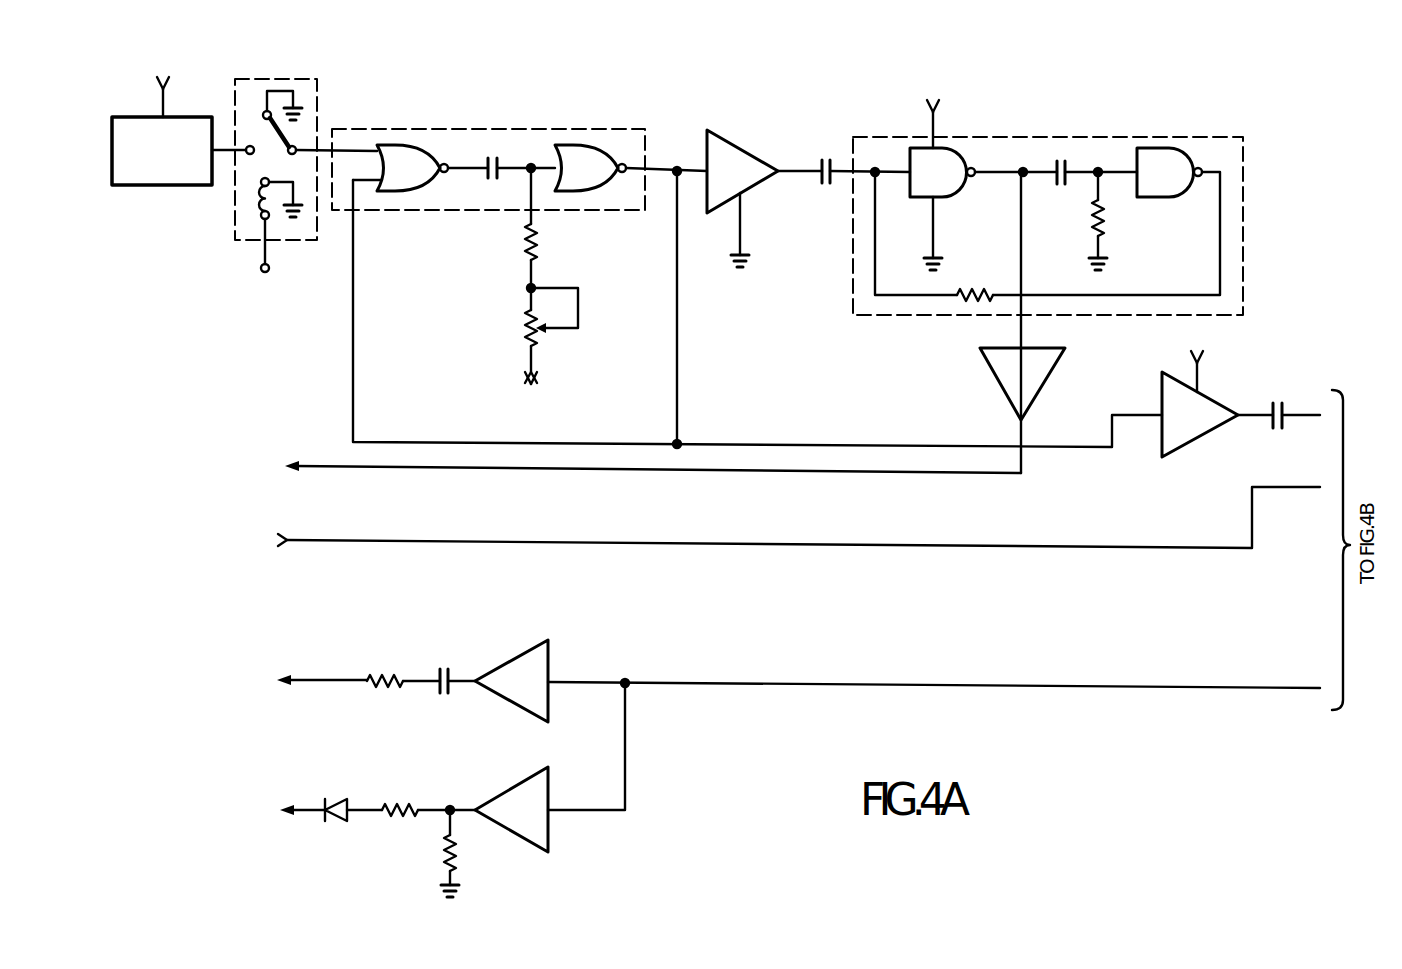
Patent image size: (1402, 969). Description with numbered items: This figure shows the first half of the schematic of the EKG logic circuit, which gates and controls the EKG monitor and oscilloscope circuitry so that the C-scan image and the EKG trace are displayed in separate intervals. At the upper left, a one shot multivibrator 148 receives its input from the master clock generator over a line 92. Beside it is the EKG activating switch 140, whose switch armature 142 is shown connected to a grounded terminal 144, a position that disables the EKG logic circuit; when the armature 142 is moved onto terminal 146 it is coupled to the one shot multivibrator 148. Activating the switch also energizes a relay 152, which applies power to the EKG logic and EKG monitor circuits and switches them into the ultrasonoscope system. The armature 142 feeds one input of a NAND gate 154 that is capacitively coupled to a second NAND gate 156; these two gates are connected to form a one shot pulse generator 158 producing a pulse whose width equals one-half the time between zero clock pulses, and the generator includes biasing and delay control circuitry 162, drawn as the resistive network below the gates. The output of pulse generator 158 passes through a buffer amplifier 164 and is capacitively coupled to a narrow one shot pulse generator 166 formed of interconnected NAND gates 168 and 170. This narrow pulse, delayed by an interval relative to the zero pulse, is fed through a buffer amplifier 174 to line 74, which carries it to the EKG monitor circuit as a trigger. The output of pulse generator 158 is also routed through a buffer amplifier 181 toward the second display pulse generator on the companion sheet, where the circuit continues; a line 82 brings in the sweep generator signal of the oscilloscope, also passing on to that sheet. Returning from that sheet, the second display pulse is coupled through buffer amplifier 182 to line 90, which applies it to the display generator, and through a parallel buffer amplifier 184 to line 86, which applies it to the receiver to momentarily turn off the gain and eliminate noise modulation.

The line 74 is at (340, 468).
The line 82 is at (340, 543).
The line 86 is at (325, 682).
The line 90 is at (301, 812).
The line 92 is at (163, 100).
The EKG activating switch 140 is at (318, 82).
The switch armature 142 is at (296, 147).
The terminal 144 is at (266, 108).
The terminal 146 is at (247, 146).
The one shot multivibrator 148 is at (112, 143).
The relay 152 is at (262, 215).
The NAND gate 154 is at (421, 179).
The second NAND gate 156 is at (599, 179).
The one shot pulse generator 158 is at (474, 129).
The biasing and delay control circuitry 162 is at (522, 315).
The buffer amplifier 164 is at (747, 182).
The narrow one shot pulse generator 166 is at (1024, 137).
The NAND gate 168 is at (945, 182).
The NAND gate 170 is at (1172, 182).
The buffer amplifier 174 is at (1034, 379).
The buffer amplifier 181 is at (1199, 426).
The buffer amplifier 182 is at (534, 821).
The buffer amplifier 184 is at (534, 692).